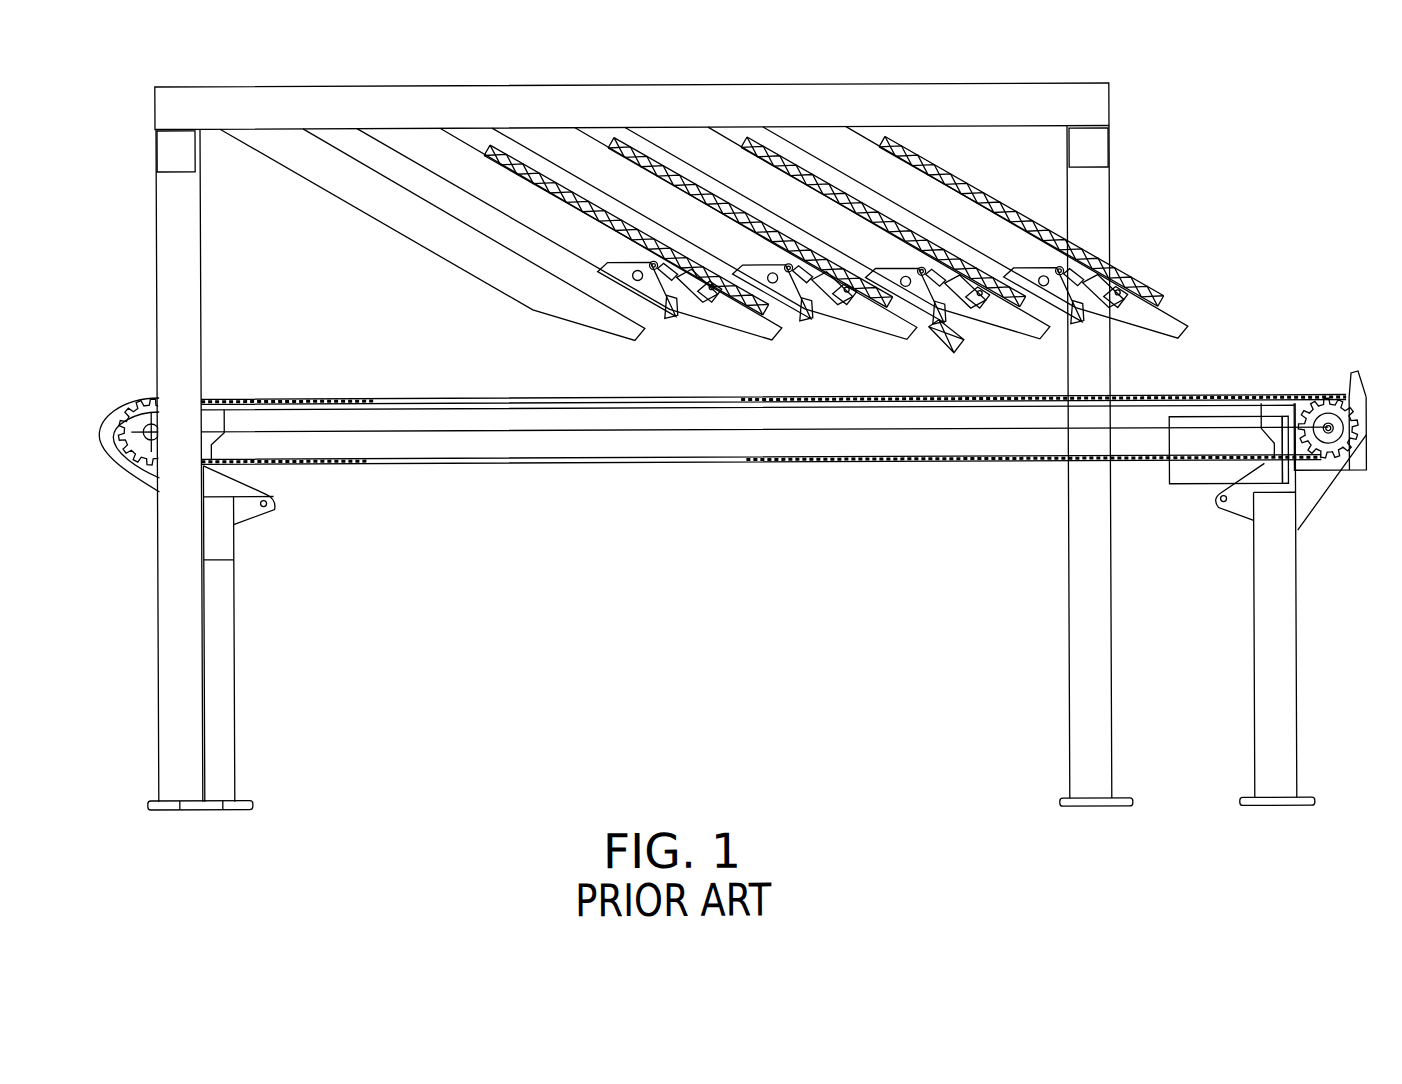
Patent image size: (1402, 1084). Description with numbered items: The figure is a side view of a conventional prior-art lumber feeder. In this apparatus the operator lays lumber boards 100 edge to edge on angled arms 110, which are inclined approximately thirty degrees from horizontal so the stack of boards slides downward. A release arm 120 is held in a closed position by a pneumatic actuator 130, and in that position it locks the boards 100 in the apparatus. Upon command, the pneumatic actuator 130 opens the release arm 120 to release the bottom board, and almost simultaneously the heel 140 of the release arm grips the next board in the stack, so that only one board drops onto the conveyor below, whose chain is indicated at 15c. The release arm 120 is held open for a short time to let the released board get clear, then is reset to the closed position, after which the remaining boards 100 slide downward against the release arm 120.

The lumber boards 100 is at (778, 328).
The angled arms 110 is at (872, 325).
The release arm 120 is at (822, 316).
The pneumatic actuator 130 is at (997, 309).
The heel 140 is at (890, 283).
The conveyor chain 15c is at (667, 446).